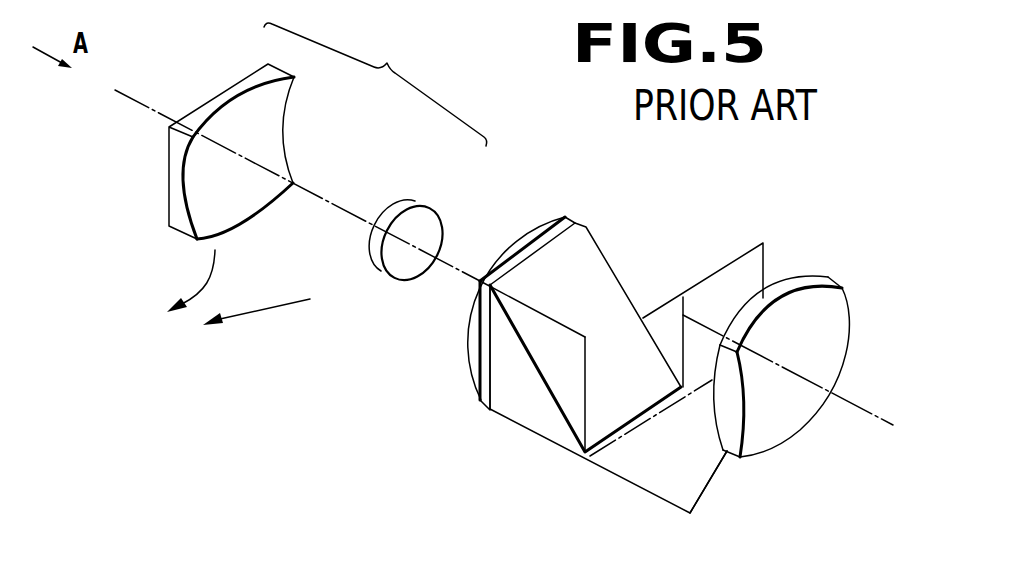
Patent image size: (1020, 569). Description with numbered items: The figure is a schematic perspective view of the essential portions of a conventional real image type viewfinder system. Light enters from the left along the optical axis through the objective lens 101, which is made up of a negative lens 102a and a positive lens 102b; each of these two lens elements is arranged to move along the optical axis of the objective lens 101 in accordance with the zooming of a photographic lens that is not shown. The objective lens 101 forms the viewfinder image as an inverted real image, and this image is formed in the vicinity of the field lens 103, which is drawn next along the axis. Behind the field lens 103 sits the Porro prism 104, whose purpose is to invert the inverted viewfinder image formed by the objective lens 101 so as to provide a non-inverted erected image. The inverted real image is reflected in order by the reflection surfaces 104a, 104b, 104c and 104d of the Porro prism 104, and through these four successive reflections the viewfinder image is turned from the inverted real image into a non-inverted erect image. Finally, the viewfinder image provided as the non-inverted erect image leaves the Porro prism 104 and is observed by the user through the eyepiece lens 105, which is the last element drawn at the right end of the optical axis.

The objective lens 101 is at (375, 84).
The negative lens 102a is at (263, 133).
The positive lens 102b is at (412, 220).
The field lens 103 is at (522, 237).
The Porro prism 104 is at (650, 457).
The reflection surface 104a is at (592, 270).
The reflection surface 104b is at (508, 418).
The reflection surface 104c is at (717, 468).
The reflection surface 104d is at (662, 300).
The eyepiece lens 105 is at (835, 317).